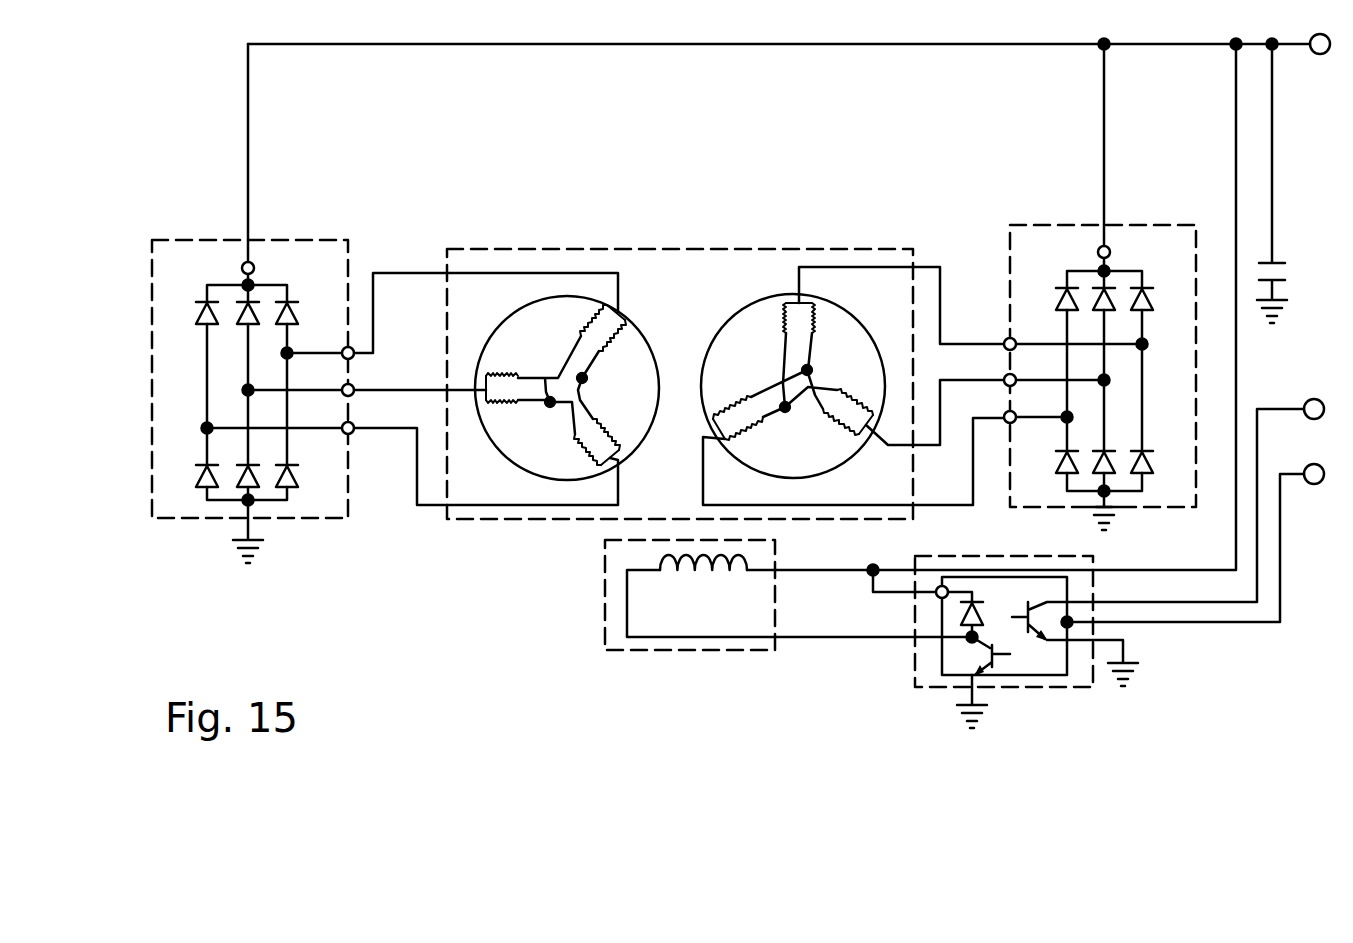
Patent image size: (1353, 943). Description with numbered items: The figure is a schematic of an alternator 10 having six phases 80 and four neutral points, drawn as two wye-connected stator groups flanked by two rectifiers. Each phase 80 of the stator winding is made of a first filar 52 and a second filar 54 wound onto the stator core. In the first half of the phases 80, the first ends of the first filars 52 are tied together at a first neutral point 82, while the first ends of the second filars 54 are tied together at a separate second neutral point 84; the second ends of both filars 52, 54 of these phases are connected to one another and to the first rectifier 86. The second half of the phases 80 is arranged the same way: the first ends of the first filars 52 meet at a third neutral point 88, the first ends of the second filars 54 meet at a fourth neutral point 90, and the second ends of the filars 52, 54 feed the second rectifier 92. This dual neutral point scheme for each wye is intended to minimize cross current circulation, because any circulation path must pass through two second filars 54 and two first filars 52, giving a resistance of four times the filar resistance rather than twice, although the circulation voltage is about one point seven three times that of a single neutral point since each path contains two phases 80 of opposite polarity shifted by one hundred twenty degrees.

The electrical machine 10 is at (448, 248).
The first filar 52 is at (585, 333).
The second filar 54 is at (498, 375).
The phase 80 is at (588, 342).
The first neutral point 82 is at (495, 545).
The second neutral point 84 is at (586, 378).
The first rectifier 86 is at (150, 238).
The third neutral point 88 is at (735, 445).
The fourth neutral point 90 is at (855, 400).
The second rectifier 92 is at (1205, 392).